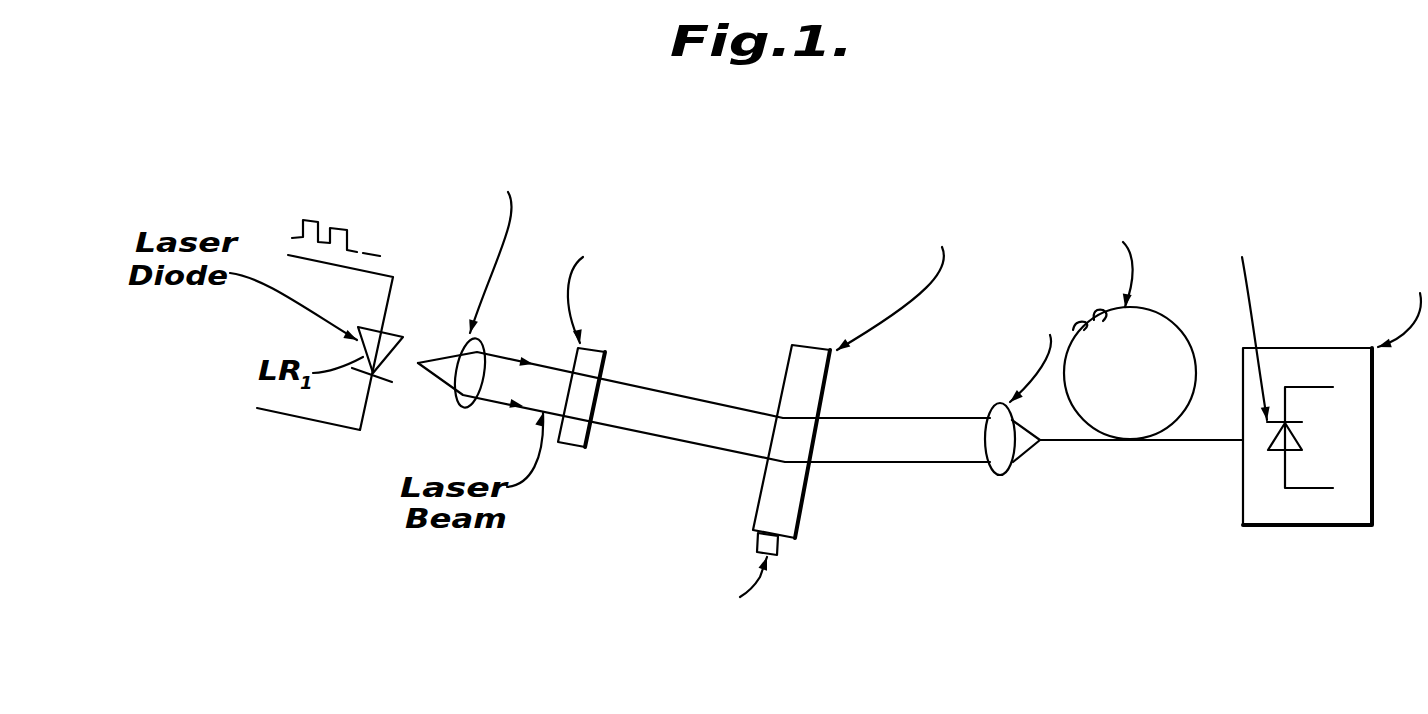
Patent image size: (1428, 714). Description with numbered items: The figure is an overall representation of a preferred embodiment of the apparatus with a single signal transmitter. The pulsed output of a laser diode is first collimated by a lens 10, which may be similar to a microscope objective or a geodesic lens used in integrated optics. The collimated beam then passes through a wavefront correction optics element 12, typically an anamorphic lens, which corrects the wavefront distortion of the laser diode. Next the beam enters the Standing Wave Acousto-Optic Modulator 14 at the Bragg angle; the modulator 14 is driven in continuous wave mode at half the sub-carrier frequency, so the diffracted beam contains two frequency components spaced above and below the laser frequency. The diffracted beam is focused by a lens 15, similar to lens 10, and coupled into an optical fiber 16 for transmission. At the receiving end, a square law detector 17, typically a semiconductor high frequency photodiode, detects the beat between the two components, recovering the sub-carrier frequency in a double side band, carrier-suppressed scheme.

The lens 10 is at (463, 397).
The wavefront correction optics (WCO) element 12 is at (590, 358).
The Standing Wave Acousto-Optic Modulator 14 is at (772, 500).
The lens 15 is at (1002, 468).
The optical fiber 16 is at (1163, 350).
The square law detector 17 is at (1258, 513).